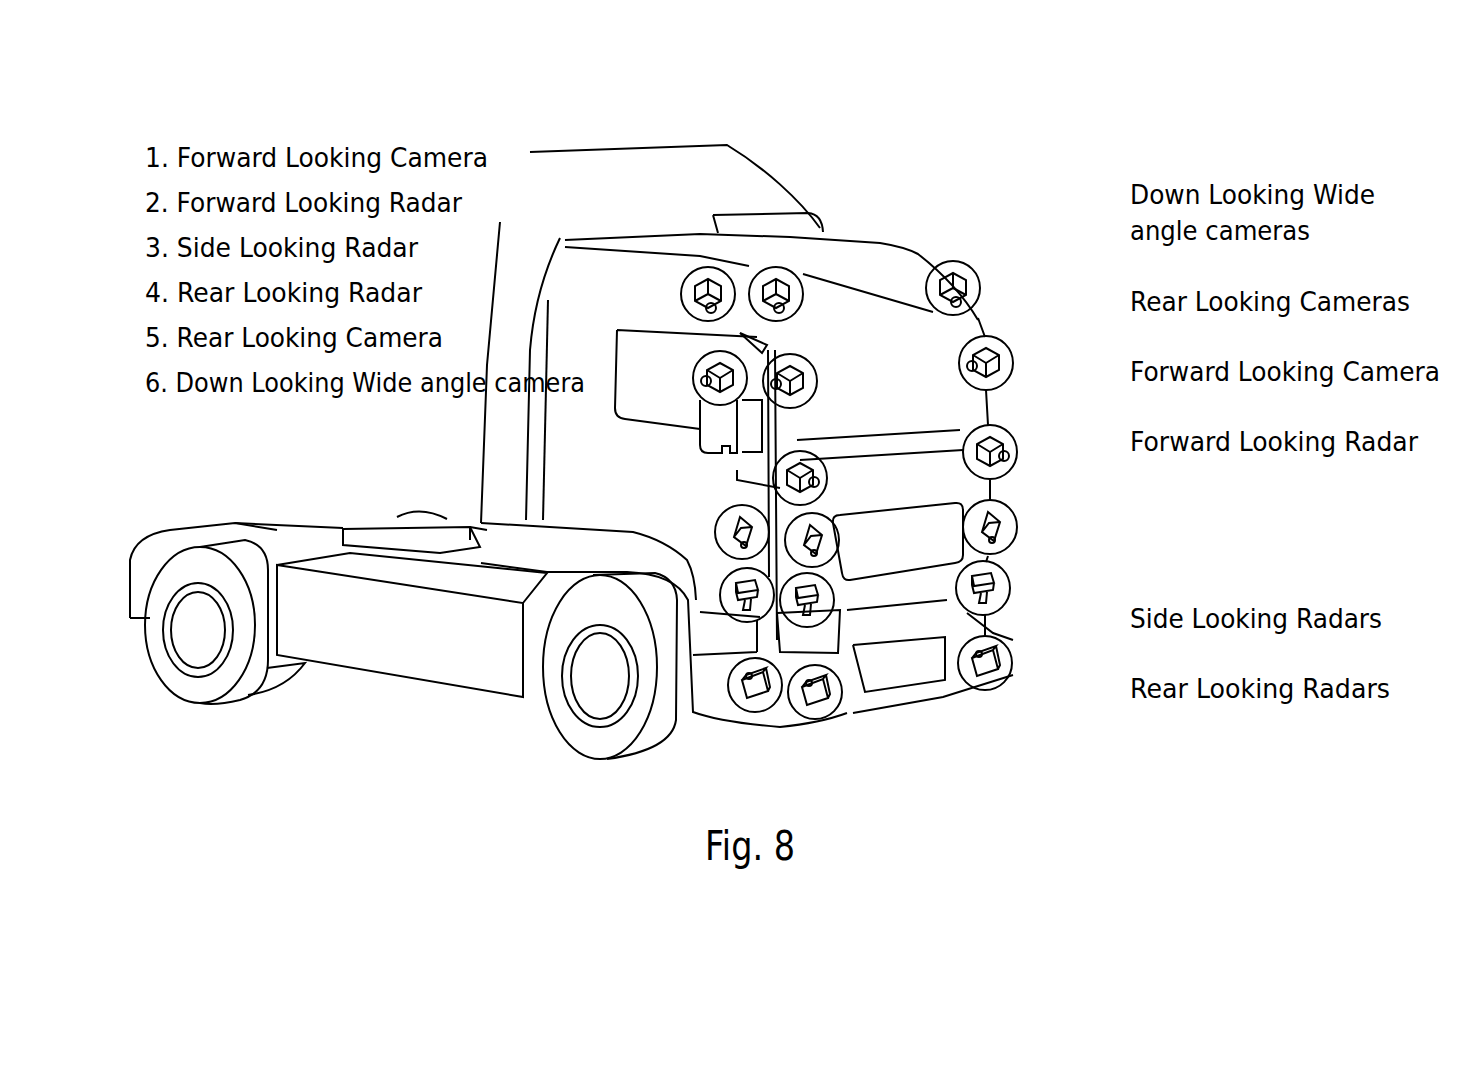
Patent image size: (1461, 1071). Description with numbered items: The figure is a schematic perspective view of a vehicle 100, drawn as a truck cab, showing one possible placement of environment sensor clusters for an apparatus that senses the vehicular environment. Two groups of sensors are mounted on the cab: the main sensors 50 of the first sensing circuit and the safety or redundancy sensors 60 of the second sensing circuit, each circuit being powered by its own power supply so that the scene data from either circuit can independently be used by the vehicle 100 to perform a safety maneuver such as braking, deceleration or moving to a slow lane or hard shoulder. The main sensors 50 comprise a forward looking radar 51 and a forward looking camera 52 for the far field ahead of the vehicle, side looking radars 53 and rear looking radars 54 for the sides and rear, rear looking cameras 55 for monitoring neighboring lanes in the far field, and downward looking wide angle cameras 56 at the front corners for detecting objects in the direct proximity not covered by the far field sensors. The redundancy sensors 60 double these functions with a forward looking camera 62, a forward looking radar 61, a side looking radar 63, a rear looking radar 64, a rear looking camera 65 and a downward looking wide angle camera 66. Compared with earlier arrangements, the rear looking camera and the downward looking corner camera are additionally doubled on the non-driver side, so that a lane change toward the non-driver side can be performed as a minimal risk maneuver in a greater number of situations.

The vehicle 100 is at (525, 728).
The sensor of the second sensing circuit 60 is at (346, 112).
The forward looking camera 62 is at (681, 286).
The forward looking radar 61 is at (698, 357).
The side looking radar 63 is at (721, 597).
The rear looking radar 64 is at (730, 682).
The rearward looking camera 65 is at (464, 337).
The downward looking camera 66 is at (716, 530).
The sensor of the first sensing circuit 50 is at (1190, 88).
The downward looking camera 56 is at (803, 274).
The rearward looking camera 55 is at (804, 358).
The forward looking camera 52 is at (1013, 437).
The forward looking radar 51 is at (1011, 506).
The side looking radars 53 is at (818, 626).
The rear looking radars 54 is at (833, 715).